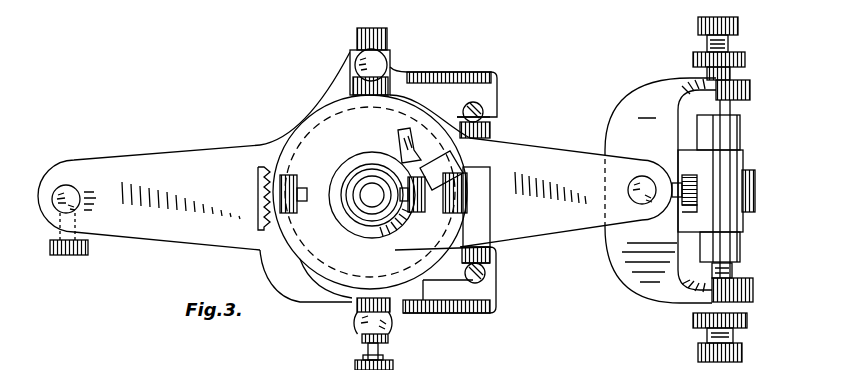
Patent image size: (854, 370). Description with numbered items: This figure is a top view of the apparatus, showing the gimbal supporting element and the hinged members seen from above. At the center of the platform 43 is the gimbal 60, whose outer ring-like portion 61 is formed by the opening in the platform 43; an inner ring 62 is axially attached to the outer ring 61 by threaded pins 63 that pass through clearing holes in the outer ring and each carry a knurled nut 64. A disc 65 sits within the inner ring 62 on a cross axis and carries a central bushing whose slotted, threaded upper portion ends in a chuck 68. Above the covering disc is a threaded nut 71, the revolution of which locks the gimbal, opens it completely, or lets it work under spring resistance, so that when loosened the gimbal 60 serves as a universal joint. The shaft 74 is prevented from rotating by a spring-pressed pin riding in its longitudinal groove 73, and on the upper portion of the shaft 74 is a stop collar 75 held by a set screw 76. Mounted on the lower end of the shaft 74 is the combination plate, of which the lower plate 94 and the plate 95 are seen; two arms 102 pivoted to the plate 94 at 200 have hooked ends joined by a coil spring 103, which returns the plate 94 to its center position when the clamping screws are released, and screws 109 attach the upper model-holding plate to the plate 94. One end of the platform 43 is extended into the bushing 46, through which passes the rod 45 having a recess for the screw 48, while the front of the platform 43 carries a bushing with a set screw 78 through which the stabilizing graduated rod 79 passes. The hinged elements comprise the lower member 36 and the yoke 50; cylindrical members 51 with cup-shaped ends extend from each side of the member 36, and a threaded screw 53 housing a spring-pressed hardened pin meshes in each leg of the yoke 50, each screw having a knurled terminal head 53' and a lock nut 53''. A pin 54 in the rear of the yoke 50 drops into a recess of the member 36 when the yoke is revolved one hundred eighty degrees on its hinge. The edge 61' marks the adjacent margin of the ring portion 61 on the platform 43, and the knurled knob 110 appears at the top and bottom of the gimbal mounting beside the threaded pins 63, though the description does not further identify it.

The member 36 is at (718, 163).
The platform 43 is at (248, 238).
The rod 45 is at (640, 182).
The bushing 46 is at (622, 183).
The screw 48 is at (694, 204).
The yoke 50 is at (637, 109).
The cylindrical member 51 is at (736, 129).
The threaded screw 53 is at (745, 187).
The knurled terminal head 53' is at (743, 187).
The lock nut 53'' is at (744, 190).
The pin 54 is at (686, 178).
The gimbal 60 is at (334, 137).
The outer ring-like portion 61 is at (453, 252).
The arm edge 61' is at (516, 132).
The inner ring 62 is at (397, 137).
The threaded pin 63 is at (389, 84).
The knurled nut 64 is at (353, 362).
The disc 65 is at (441, 170).
The chuck 68 is at (356, 202).
The threaded nut 71 is at (370, 235).
The longitudinal groove 73 is at (383, 203).
The shaft 74 is at (362, 186).
The stop collar 75 is at (350, 193).
The set screw 76 is at (425, 205).
The set screw 78 is at (62, 256).
The stabilizing graduated rod 79 is at (64, 192).
The lower plate 94 is at (497, 76).
The plate 95 is at (486, 122).
The arm 102 is at (430, 95).
The coil spring 103 is at (259, 190).
The screw 109 is at (378, 62).
The knurled knob 110 is at (384, 37).
The pivot 200 is at (485, 112).